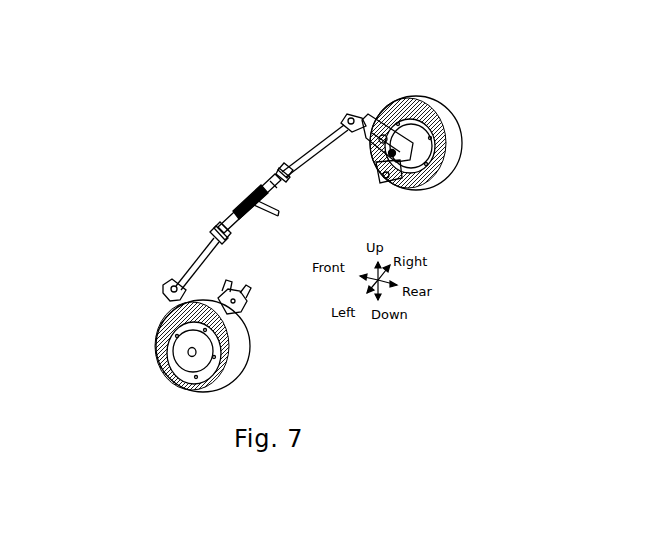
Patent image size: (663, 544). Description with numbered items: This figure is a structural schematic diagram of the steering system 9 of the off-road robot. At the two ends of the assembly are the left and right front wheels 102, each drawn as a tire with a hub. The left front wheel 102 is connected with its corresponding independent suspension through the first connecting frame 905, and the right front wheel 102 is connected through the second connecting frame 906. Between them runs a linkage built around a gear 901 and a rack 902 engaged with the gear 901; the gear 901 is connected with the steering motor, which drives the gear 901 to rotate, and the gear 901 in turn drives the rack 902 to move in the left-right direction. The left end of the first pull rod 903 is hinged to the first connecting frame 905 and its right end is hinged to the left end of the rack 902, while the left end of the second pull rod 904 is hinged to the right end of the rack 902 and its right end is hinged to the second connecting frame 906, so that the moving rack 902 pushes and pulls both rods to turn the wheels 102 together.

The steering system 9 is at (132, 103).
The front wheel 102 is at (405, 92).
The gear 901 is at (252, 191).
The rack 902 is at (245, 207).
The first pull rod 903 is at (195, 258).
The second pull rod 904 is at (312, 150).
The first connecting frame 905 is at (170, 287).
The second connecting frame 906 is at (348, 115).